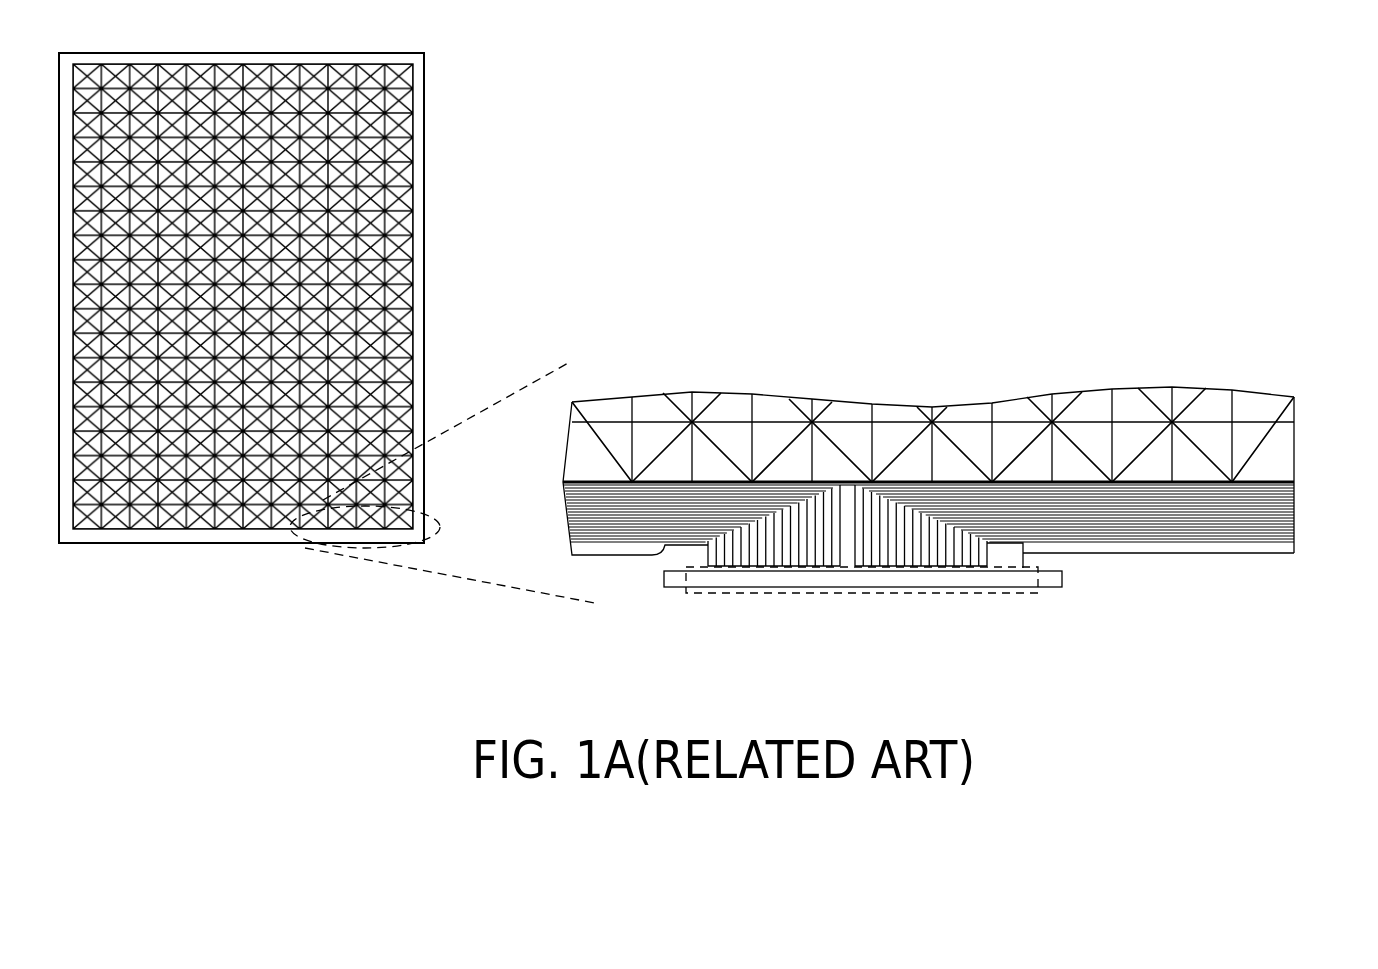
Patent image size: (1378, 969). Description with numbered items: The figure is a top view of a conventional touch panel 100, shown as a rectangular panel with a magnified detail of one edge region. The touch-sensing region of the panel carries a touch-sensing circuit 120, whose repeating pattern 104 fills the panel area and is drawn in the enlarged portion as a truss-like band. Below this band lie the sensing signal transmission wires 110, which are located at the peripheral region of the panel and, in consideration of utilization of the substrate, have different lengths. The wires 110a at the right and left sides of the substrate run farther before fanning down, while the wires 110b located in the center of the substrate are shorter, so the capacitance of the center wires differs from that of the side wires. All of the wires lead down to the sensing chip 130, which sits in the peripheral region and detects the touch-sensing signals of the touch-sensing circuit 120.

The touch panel 100 is at (245, 348).
The sensing electrode pattern 104 is at (253, 541).
The sensing signal transmission wires 110 is at (928, 536).
The sensing signal transmission wires 110a is at (755, 552).
The sensing signal transmission wires 110b is at (848, 553).
The touch-sensing circuit 120 is at (1246, 409).
The sensing chip 130 is at (926, 595).